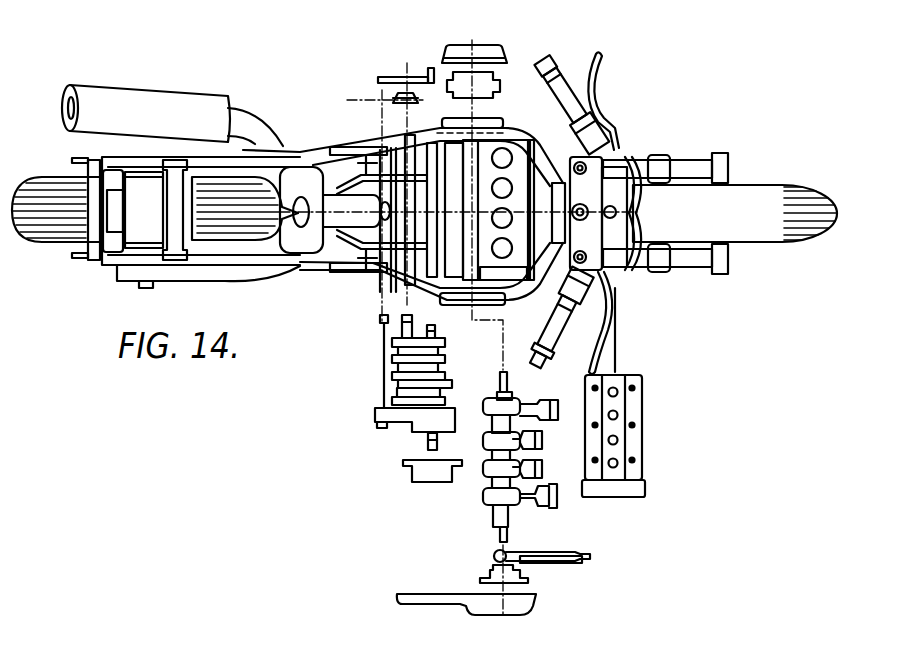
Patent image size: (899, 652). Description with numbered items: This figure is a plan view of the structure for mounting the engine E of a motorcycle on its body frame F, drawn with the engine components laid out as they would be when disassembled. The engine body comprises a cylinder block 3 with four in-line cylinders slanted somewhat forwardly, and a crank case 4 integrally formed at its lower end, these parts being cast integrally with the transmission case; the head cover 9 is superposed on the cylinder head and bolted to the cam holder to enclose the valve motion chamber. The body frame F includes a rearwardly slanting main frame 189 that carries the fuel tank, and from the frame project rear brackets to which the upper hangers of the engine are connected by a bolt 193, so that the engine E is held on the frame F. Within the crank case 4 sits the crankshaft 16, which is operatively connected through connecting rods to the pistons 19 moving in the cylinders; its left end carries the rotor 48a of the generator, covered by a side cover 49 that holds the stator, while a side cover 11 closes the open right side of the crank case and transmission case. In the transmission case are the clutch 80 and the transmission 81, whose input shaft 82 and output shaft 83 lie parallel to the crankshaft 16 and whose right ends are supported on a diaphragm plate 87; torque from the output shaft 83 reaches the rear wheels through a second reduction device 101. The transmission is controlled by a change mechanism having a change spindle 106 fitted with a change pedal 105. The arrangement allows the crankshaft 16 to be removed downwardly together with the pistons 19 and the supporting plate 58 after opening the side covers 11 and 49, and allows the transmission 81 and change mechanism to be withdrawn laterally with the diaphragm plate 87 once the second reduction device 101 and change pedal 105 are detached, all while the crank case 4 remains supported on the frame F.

The side cover 49 is at (488, 48).
The rotor 48a is at (460, 99).
The change pedal 105 is at (405, 77).
The second reduction device 101 is at (360, 100).
The bolt 193 is at (365, 158).
The crank case 4 is at (457, 205).
The cylinder block 3 is at (525, 229).
The body frame F is at (548, 143).
The engine E is at (535, 222).
The main frame 189 is at (566, 290).
The side cover 11 is at (380, 290).
The output shaft 83 is at (412, 322).
The transmission 81 is at (448, 372).
The change spindle 106 is at (382, 356).
The diaphragm plate 87 is at (375, 415).
The input shaft 82 is at (437, 442).
The clutch 80 is at (420, 483).
The crankshaft 16 is at (497, 523).
The piston 19 is at (556, 502).
The supporting plate 58 is at (539, 551).
The head cover 9 is at (642, 438).